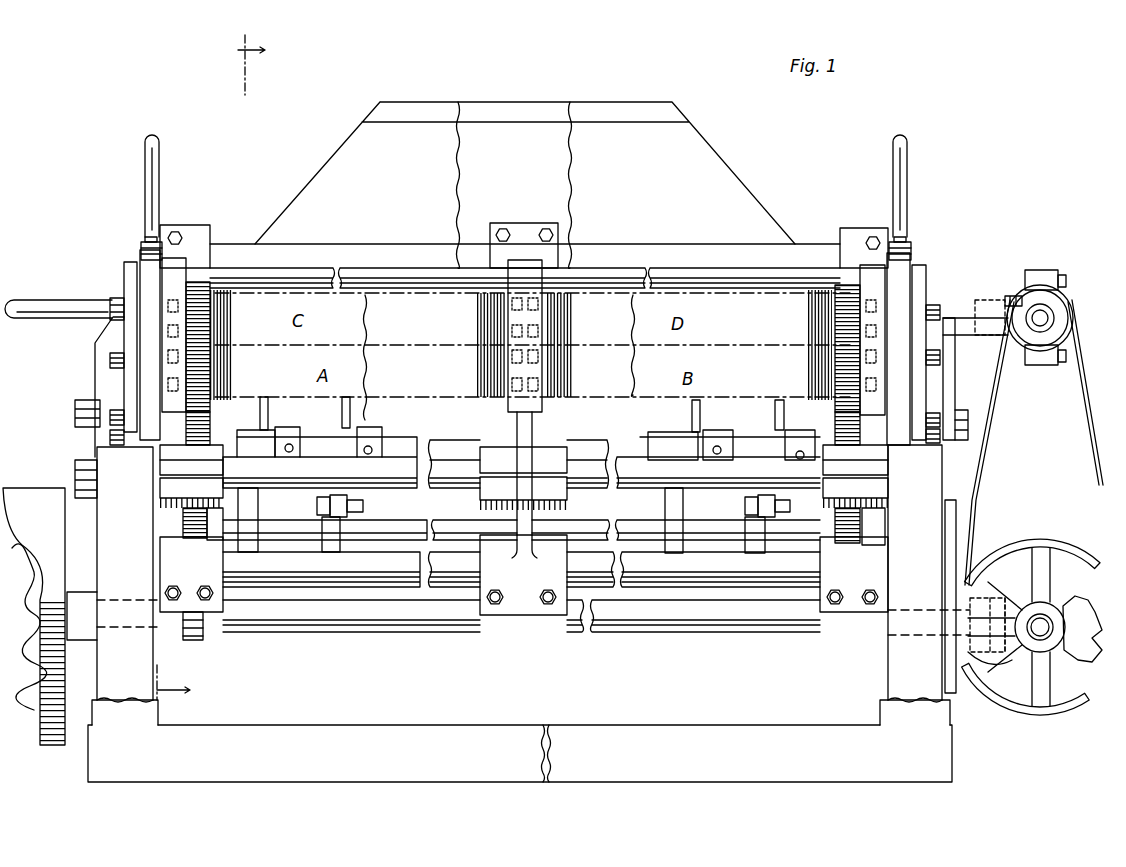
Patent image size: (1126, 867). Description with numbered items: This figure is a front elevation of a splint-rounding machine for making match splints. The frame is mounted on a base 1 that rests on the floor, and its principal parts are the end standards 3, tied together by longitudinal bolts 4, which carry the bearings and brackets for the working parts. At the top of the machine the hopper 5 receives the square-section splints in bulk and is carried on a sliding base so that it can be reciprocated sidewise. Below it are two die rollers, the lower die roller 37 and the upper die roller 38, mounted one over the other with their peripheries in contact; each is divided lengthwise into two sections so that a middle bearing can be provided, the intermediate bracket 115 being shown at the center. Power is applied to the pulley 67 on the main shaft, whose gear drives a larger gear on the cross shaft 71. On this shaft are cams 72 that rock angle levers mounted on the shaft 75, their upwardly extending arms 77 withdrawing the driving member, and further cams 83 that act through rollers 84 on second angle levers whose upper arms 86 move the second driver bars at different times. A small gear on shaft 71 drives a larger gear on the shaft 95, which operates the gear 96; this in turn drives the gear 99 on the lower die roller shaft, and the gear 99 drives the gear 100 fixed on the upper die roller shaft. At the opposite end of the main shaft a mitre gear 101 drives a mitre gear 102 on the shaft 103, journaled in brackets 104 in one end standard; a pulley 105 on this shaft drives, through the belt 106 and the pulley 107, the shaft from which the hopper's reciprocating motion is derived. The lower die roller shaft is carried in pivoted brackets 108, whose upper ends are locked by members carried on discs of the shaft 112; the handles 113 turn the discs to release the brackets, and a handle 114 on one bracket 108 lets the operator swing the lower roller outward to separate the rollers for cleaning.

The base 1 is at (520, 753).
The end standards 3 is at (521, 585).
The longitudinal bolts 4 is at (976, 412).
The hopper 5 is at (612, 100).
The die roller 37 is at (320, 446).
The upper die roller 38 is at (284, 294).
The pulley 67 is at (34, 616).
The shaft 71 is at (398, 519).
The cam 72 is at (253, 547).
The shaft 75 is at (439, 440).
The upwardly extending arms 77 is at (270, 417).
The cams 83 is at (334, 549).
The rollers 84 is at (325, 509).
The upper arms 86 is at (351, 415).
The shaft 95 is at (718, 459).
The gear 96 is at (211, 419).
The gear 99 is at (205, 381).
The gear 100 is at (203, 298).
The mitre gear 101 is at (1007, 593).
The mitre gear 102 is at (1064, 591).
The shaft 103 is at (1036, 643).
The brackets 104 is at (984, 663).
The pulley 105 is at (1030, 543).
The belt 106 is at (976, 503).
The pulley 107 is at (1015, 343).
The brackets 108 is at (127, 336).
The shaft 112 is at (692, 272).
The handles 113 is at (159, 198).
The handle 114 is at (64, 296).
The intermediate bracket 115 is at (515, 405).